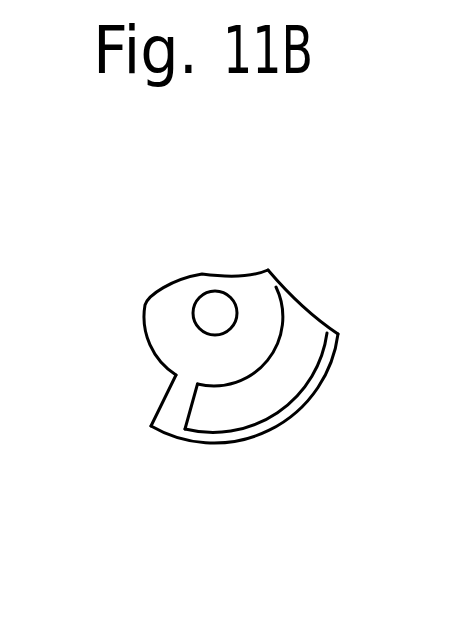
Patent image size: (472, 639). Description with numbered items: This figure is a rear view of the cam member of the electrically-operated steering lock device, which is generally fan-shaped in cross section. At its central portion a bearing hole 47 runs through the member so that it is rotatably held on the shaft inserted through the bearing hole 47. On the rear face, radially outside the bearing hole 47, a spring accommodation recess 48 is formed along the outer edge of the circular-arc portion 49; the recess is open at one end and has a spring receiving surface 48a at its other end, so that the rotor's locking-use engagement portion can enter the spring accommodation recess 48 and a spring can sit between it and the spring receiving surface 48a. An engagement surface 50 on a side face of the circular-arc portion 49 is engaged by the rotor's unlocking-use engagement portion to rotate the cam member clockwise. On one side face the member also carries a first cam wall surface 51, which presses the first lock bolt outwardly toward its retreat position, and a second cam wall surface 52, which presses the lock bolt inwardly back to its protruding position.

The bearing hole 47 is at (220, 302).
The spring accommodation recess 48 is at (270, 387).
The spring receiving surface 48a is at (193, 401).
The circular-arc portion 49 is at (321, 367).
The engagement surface 50 is at (165, 397).
The first cam wall surface 51 is at (310, 311).
The second cam wall surface 52 is at (165, 288).